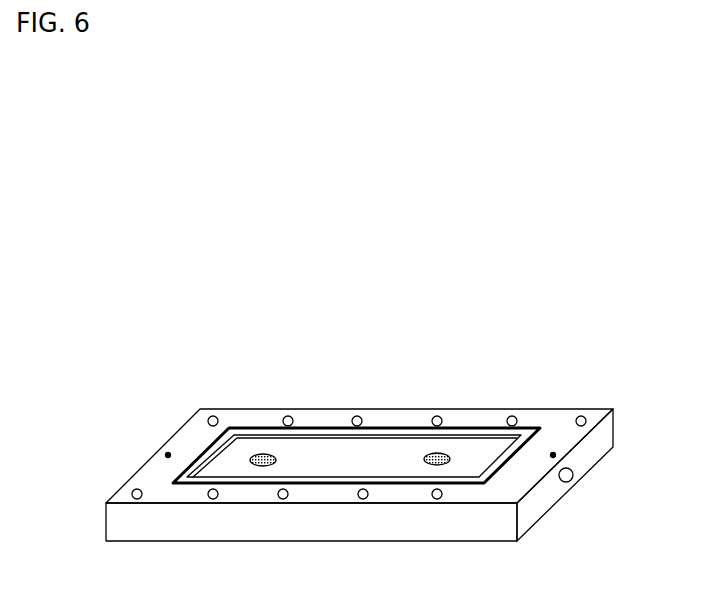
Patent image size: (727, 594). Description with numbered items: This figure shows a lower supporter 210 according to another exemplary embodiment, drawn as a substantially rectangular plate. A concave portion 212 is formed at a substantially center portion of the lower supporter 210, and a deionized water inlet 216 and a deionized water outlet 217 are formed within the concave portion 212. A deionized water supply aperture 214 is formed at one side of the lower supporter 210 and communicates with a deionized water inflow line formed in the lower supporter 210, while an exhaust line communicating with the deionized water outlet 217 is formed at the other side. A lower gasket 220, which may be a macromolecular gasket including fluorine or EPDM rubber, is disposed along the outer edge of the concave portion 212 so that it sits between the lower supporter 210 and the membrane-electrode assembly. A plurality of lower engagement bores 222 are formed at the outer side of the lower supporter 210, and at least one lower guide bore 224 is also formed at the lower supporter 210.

The lower supporter 210 is at (136, 412).
The concave portion 212 is at (375, 450).
The deionized water supply aperture 214 is at (573, 477).
The deionized water inlet 216 is at (431, 452).
The deionized water outlet 217 is at (258, 453).
The lower gasket 220 is at (480, 427).
The lower engagement bores 222 is at (583, 416).
The lower guide bore 224 is at (556, 455).